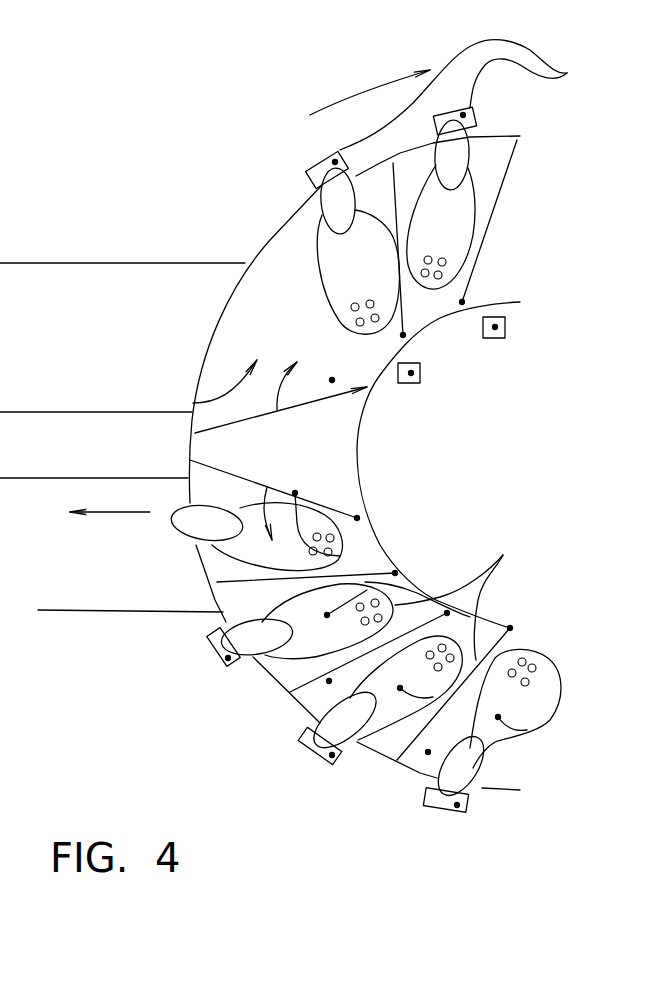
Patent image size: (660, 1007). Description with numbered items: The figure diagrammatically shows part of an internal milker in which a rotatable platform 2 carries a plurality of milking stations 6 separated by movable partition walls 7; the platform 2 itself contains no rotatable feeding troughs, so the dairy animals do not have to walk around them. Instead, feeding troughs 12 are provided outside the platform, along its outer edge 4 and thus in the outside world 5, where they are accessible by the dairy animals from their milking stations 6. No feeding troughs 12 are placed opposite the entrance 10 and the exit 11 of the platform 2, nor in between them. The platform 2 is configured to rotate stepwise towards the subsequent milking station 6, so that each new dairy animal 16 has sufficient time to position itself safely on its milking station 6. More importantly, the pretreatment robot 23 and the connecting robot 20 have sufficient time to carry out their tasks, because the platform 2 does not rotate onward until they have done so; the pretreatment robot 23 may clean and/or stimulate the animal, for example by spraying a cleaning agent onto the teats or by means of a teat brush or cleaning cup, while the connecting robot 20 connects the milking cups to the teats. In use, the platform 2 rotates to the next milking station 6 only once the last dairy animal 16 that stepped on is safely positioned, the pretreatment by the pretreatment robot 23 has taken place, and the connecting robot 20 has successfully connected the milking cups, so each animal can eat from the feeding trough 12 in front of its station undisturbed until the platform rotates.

The platform 2 is at (332, 380).
The outer edge 4 is at (420, 773).
The outside world 5 is at (226, 224).
The milking station 6 is at (329, 681).
The partition wall 7 is at (365, 582).
The entrance 10 is at (96, 399).
The exit 11 is at (130, 561).
The feeding trough 12 is at (567, 73).
The dairy animal 16 is at (503, 555).
The connecting robot 20 is at (495, 327).
The pretreatment robot 23 is at (411, 373).